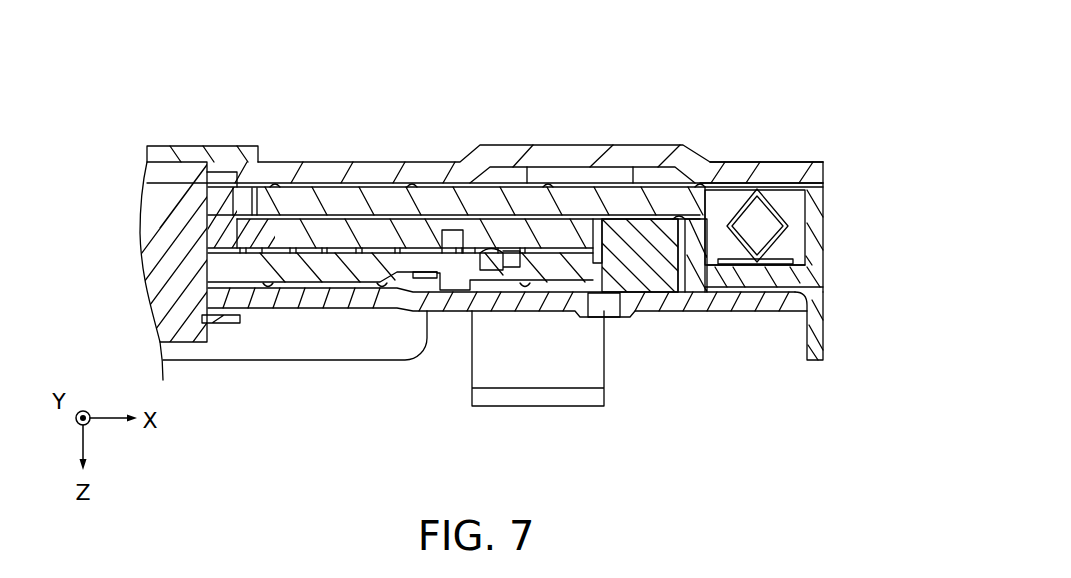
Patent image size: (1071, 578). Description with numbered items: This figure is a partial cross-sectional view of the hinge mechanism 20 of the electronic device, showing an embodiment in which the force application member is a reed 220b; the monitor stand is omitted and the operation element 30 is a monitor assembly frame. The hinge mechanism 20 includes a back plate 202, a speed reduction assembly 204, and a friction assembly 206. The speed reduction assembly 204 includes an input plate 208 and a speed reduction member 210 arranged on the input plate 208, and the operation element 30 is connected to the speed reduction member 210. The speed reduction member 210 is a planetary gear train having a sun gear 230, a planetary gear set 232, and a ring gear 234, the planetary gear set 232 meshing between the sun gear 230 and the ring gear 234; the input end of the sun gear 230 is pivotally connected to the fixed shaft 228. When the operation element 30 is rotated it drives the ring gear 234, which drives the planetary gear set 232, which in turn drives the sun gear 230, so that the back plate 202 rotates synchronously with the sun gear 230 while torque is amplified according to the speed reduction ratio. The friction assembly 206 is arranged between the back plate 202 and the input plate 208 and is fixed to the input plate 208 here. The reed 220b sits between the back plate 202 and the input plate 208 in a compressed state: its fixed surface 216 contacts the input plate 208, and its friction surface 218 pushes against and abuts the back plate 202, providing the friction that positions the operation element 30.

The hinge mechanism 20 is at (76, 80).
The operation element 30 is at (653, 300).
The back plate 202 is at (333, 172).
The speed reduction assembly 204 is at (870, 18).
The friction assembly 206 is at (728, 267).
The input plate 208 is at (813, 252).
The speed reduction member 210 is at (860, 220).
The fixed surface 216 is at (771, 268).
The friction surface 218 is at (763, 175).
The reed 220b is at (772, 243).
The fixed shaft 228 is at (175, 192).
The sun gear 230 is at (225, 228).
The planetary gear set 232 is at (363, 237).
The ring gear 234 is at (633, 260).